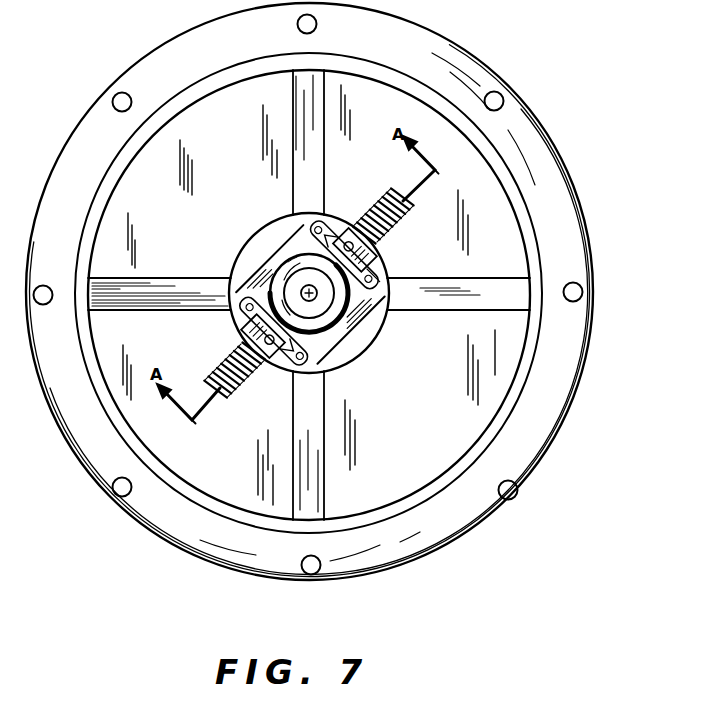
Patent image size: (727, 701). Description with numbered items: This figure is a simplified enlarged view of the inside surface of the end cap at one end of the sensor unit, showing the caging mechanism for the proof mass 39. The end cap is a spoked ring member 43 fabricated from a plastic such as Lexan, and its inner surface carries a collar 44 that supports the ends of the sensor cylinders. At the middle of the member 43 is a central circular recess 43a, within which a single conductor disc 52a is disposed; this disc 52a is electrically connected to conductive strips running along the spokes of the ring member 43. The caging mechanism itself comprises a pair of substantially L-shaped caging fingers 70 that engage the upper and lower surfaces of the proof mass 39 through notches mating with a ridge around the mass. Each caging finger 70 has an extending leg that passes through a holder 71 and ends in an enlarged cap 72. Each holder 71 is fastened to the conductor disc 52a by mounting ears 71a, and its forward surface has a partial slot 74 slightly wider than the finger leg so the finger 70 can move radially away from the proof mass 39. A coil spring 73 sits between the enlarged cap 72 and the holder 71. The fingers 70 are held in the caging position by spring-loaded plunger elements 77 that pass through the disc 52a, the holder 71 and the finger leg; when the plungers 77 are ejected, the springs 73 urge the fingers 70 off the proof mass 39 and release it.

The spoked ring member 43 is at (438, 33).
The collar 44 is at (513, 188).
The central circular recess 43a is at (347, 353).
The single conductor disc 52a is at (290, 246).
The coil spring 73 is at (354, 212).
The partial slot 74 is at (337, 237).
The holder 71 is at (372, 265).
The mounting ears 71a is at (388, 286).
The enlarged cap 72 is at (402, 218).
The spring-loaded plunger element 77 is at (243, 335).
The caging finger 70 is at (296, 358).
The proof mass 39 is at (350, 295).